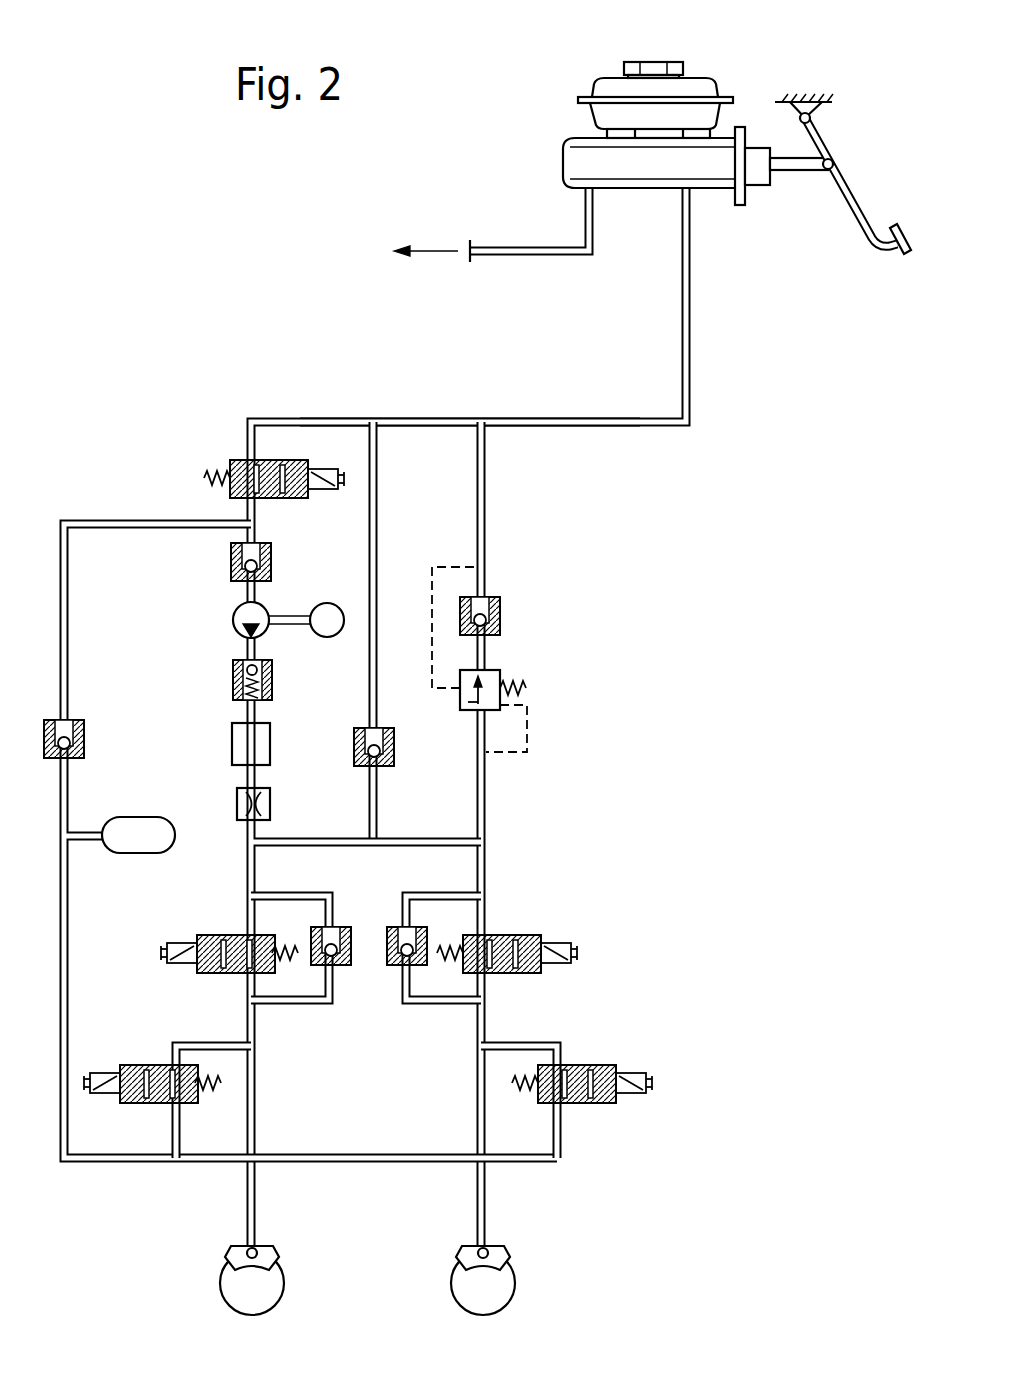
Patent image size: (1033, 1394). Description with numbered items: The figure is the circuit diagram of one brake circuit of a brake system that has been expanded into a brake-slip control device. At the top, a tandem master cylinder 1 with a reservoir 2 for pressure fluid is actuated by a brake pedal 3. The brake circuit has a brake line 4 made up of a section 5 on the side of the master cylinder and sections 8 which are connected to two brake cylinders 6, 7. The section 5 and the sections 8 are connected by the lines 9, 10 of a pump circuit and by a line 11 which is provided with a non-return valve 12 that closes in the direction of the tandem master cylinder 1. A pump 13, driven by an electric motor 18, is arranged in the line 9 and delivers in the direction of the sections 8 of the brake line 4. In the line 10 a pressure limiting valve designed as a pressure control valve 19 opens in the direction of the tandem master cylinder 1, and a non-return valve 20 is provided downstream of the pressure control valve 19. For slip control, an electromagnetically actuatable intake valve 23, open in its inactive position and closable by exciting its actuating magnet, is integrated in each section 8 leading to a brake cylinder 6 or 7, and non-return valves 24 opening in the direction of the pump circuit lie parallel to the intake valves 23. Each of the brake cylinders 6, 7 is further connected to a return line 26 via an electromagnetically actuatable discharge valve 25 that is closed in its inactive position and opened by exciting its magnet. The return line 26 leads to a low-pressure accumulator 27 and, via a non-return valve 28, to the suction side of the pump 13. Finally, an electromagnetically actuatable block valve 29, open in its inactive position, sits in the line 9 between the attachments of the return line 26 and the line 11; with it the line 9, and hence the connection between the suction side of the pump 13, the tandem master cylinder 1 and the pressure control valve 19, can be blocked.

The tandem master cylinder 1 is at (640, 168).
The reservoir 2 is at (712, 88).
The brake pedal 3 is at (866, 236).
The brake line 4 is at (651, 434).
The section 5 is at (590, 432).
The brake cylinder 6 is at (270, 1252).
The brake cylinder 7 is at (502, 1252).
The sections 8 is at (258, 869).
The line 9 is at (246, 428).
The line 10 is at (487, 506).
The line 11 is at (379, 491).
The non-return valve 12 is at (394, 748).
The pump 13 is at (245, 612).
The electric motor 18 is at (327, 640).
The pressure control valve 19 is at (497, 669).
The non-return valve 20 is at (502, 620).
The intake valve 23 is at (226, 935).
The non-return valves 24 is at (386, 950).
The discharge valve 25 is at (152, 1065).
The return line 26 is at (70, 568).
The low-pressure accumulator 27 is at (136, 822).
The non-return valve 28 is at (86, 738).
The block valve 29 is at (230, 475).